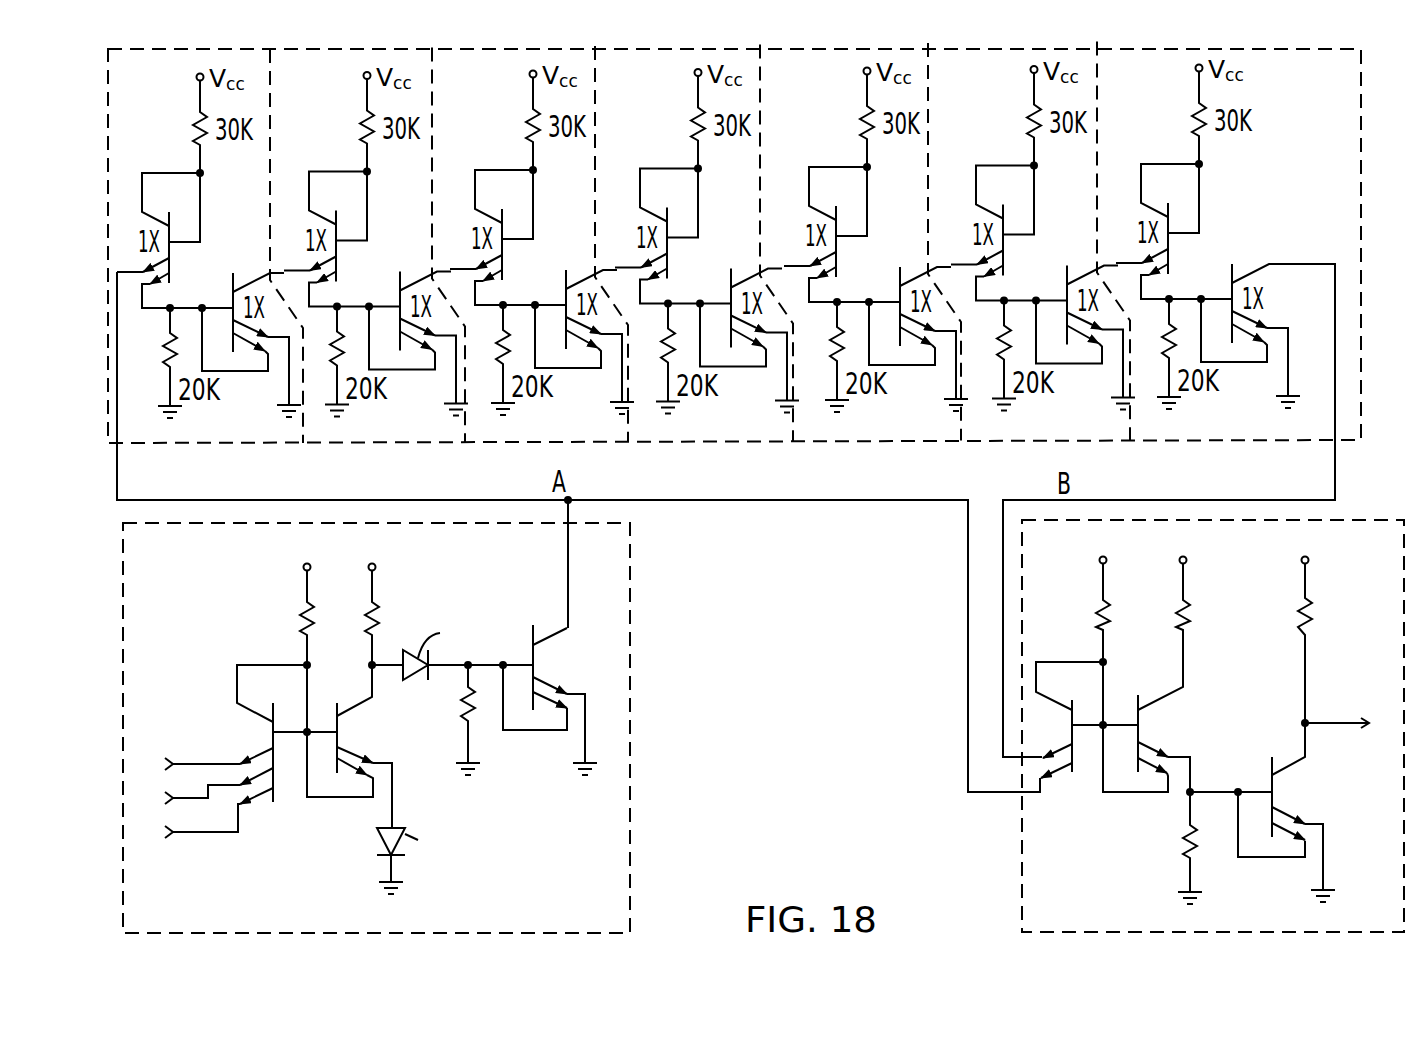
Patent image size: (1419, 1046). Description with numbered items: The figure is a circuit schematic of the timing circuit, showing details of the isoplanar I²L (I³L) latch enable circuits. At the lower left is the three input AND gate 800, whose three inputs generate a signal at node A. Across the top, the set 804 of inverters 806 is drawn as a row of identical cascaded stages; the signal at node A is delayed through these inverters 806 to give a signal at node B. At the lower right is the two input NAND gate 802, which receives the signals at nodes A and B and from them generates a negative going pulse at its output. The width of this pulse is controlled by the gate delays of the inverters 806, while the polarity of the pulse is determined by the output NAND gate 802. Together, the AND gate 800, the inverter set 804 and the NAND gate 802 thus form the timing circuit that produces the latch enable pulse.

The three input AND gate 800 is at (562, 888).
The two input NAND gate 802 is at (1121, 903).
The set of inverters 804 is at (1362, 134).
The inverter 806 is at (372, 445).